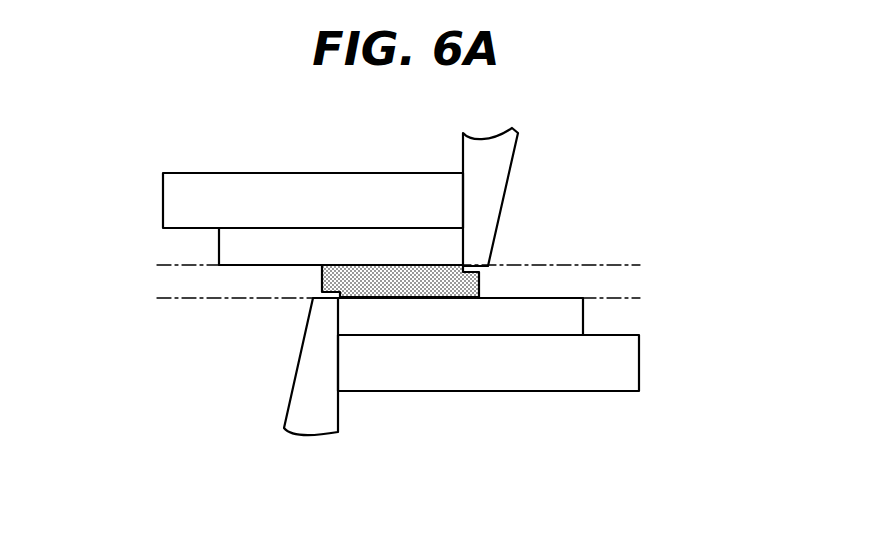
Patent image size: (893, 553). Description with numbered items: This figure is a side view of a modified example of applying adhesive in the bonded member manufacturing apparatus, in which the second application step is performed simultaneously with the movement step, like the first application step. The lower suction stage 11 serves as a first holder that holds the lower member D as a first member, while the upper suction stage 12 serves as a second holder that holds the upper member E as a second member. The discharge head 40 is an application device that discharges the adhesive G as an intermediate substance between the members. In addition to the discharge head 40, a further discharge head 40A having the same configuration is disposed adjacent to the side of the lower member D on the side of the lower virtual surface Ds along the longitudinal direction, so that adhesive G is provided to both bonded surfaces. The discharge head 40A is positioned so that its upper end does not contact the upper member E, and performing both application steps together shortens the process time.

The upper suction stage 12 is at (163, 190).
The upper member E is at (219, 248).
The lower virtual surface Ds is at (215, 298).
The adhesive G is at (479, 283).
The discharge head 40 is at (505, 200).
The discharge head 40A is at (297, 377).
The lower member D is at (583, 317).
The lower suction stage 11 is at (639, 369).